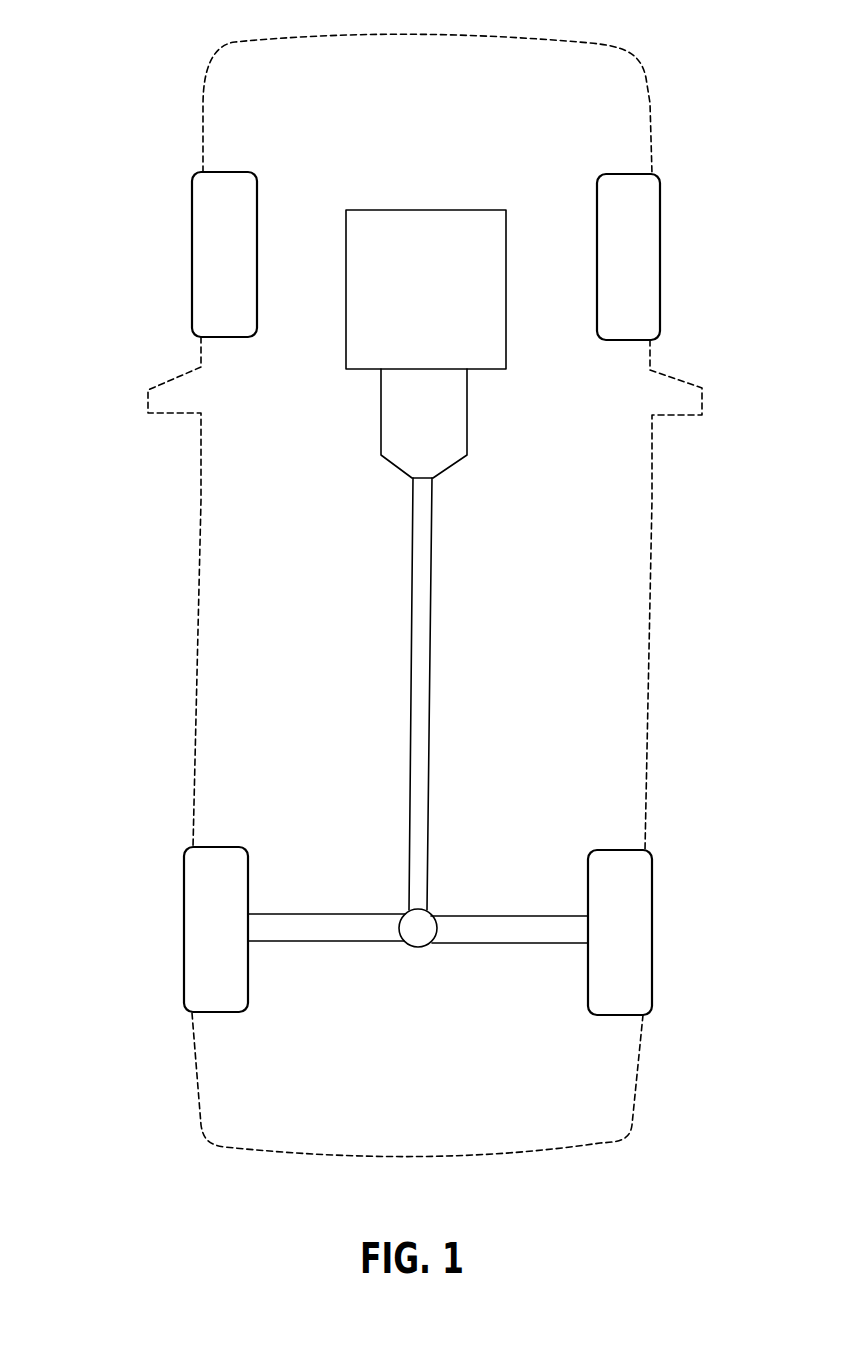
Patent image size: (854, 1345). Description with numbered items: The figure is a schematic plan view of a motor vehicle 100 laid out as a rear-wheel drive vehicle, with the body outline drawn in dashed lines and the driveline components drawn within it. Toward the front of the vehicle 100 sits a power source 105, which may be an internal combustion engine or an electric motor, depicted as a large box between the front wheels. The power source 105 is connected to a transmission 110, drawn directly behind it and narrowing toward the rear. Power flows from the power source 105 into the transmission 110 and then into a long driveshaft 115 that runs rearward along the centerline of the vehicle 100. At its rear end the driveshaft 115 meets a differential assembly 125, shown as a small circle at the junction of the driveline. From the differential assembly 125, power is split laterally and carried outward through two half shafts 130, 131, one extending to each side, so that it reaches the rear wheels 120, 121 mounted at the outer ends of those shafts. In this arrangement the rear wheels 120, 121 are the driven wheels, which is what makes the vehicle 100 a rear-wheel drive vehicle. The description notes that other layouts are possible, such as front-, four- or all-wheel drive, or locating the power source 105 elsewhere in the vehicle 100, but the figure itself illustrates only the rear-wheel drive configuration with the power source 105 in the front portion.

The motor vehicle 100 is at (178, 128).
The power source 105 is at (443, 304).
The transmission 110 is at (443, 437).
The driveshaft 115 is at (427, 757).
The rear wheel 120 is at (234, 944).
The rear wheel 121 is at (637, 947).
The differential assembly 125 is at (417, 947).
The half shaft 130 is at (342, 941).
The half shaft 131 is at (506, 943).